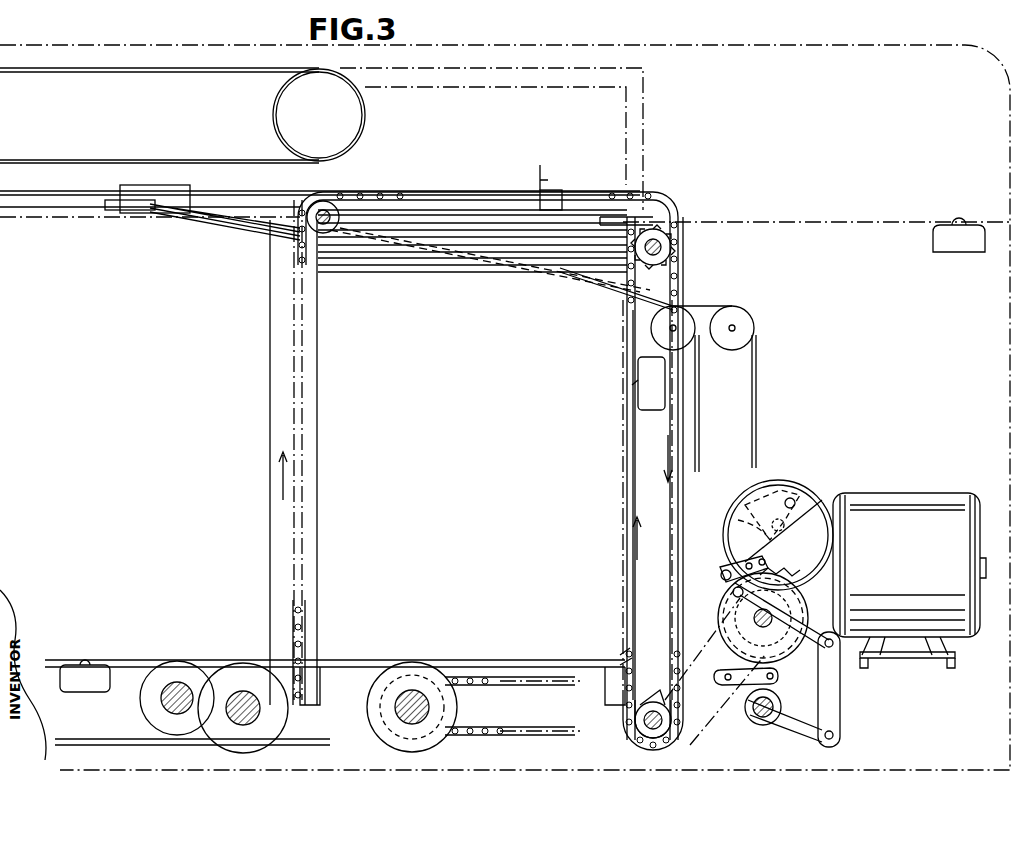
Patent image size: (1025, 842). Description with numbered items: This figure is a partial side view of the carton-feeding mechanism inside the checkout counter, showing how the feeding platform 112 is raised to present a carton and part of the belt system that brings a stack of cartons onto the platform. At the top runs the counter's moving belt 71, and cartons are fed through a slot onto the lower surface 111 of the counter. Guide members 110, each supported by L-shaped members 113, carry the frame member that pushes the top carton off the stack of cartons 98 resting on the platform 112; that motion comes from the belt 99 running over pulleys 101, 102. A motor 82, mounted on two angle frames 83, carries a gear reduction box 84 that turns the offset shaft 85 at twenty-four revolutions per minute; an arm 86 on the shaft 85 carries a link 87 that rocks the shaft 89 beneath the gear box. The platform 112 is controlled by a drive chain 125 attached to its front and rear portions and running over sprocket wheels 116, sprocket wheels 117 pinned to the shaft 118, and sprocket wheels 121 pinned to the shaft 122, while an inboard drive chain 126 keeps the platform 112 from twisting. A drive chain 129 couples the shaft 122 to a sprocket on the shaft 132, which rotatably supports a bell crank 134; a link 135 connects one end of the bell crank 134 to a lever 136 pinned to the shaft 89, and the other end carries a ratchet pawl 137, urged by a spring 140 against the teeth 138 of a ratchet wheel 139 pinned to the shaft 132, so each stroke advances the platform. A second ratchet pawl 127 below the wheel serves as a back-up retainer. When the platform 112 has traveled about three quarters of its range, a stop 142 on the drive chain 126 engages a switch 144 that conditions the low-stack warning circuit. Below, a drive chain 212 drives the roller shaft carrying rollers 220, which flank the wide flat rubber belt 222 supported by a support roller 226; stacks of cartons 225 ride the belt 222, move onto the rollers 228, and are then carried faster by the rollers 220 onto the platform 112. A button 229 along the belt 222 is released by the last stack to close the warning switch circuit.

The moving belt 71 is at (128, 72).
The motor 82 is at (950, 495).
The angle frames 83 is at (868, 668).
The gear reduction box 84 is at (780, 480).
The offset shaft 85 is at (782, 503).
The arm 86 is at (825, 498).
The link 87 is at (738, 515).
The shaft 89 is at (770, 722).
The stack of cartons 98 is at (318, 270).
The belt 99 is at (758, 398).
The pulley 101 is at (690, 313).
The pulley 102 is at (742, 330).
The guide members 110 is at (640, 214).
The lower surface 111 is at (790, 222).
The feeding platform 112 is at (375, 660).
The L-shaped members 113 is at (185, 186).
The sprocket wheels 116 is at (335, 196).
The sprocket wheels 117 is at (650, 220).
The shaft 118 is at (662, 248).
The sprocket wheels 121 is at (678, 705).
The shaft 122 is at (650, 726).
The drive chain 125 is at (292, 420).
The drive chain 126 is at (623, 520).
The second ratchet pawl 127 is at (780, 672).
The drive chain 129 is at (692, 730).
The shaft 132 is at (775, 620).
The bell crank 134 is at (720, 578).
The link 135 is at (841, 708).
The lever 136 is at (800, 740).
The ratchet pawl 137 is at (728, 560).
The teeth 138 is at (775, 572).
The ratchet wheel 139 is at (818, 582).
The spring 140 is at (733, 594).
The stop 142 is at (632, 650).
The switch 144 is at (640, 400).
The drive chain 212 is at (480, 736).
The rollers 220 is at (458, 716).
The wide flat rubber belt 222 is at (305, 746).
The stacks of cartons 225 is at (35, 213).
The support roller 226 is at (150, 705).
The rollers 228 is at (280, 723).
The button 229 is at (88, 662).